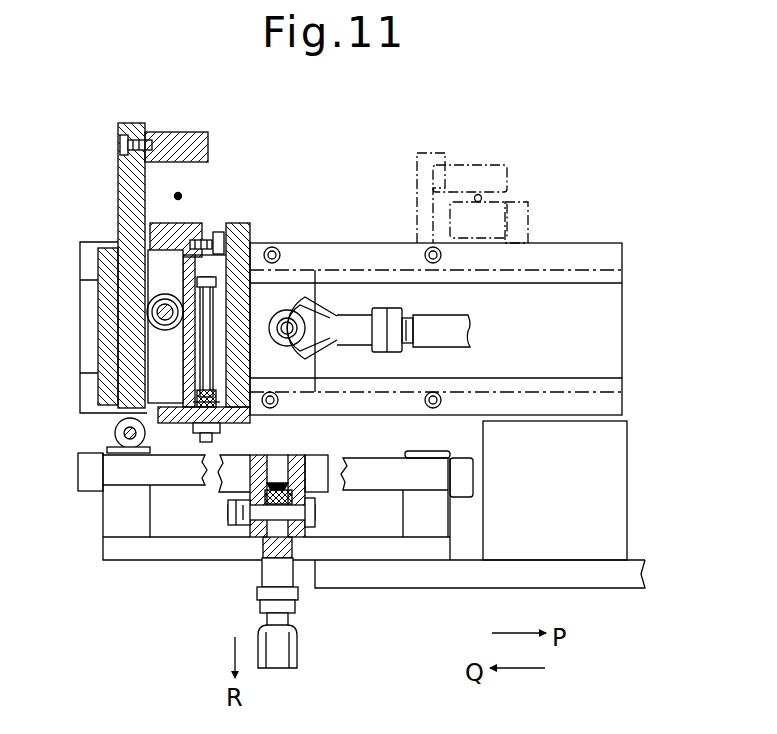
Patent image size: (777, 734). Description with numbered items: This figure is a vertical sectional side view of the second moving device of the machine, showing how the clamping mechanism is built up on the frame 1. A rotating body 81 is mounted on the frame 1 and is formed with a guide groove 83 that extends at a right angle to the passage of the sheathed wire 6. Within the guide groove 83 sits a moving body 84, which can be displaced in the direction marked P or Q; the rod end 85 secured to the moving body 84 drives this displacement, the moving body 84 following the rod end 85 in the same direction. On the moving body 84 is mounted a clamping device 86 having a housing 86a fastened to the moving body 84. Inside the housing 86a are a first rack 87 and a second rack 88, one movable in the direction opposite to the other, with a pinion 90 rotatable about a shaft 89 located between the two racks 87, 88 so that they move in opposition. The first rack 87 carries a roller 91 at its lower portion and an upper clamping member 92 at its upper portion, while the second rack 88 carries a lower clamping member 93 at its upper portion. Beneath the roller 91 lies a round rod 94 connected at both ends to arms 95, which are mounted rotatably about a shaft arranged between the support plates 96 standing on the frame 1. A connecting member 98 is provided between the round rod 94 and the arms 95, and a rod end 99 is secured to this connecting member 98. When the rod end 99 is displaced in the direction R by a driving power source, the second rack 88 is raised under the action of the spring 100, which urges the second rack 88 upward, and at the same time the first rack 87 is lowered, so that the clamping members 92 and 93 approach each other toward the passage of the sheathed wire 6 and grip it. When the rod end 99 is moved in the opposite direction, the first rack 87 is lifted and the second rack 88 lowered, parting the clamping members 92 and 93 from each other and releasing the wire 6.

The frame 1 is at (633, 570).
The sheathed wire 6 is at (175, 194).
The rotating body 81 is at (330, 243).
The guide groove 83 is at (465, 283).
The moving body 84 is at (302, 293).
The rod end 85 is at (358, 323).
The clamping device 86 is at (118, 121).
The housing 86a is at (98, 308).
The first rack 87 is at (125, 185).
The second rack 88 is at (228, 225).
The shaft 89 is at (163, 332).
The pinion 90 is at (168, 285).
The roller 91 is at (113, 436).
The upper clamping member 92 is at (185, 132).
The lower clamping member 93 is at (190, 225).
The round rod 94 is at (375, 470).
The arms 95 is at (80, 472).
The support plate 96 is at (118, 517).
The connecting member 98 is at (307, 531).
The rod end 99 is at (293, 653).
The spring 100 is at (252, 410).